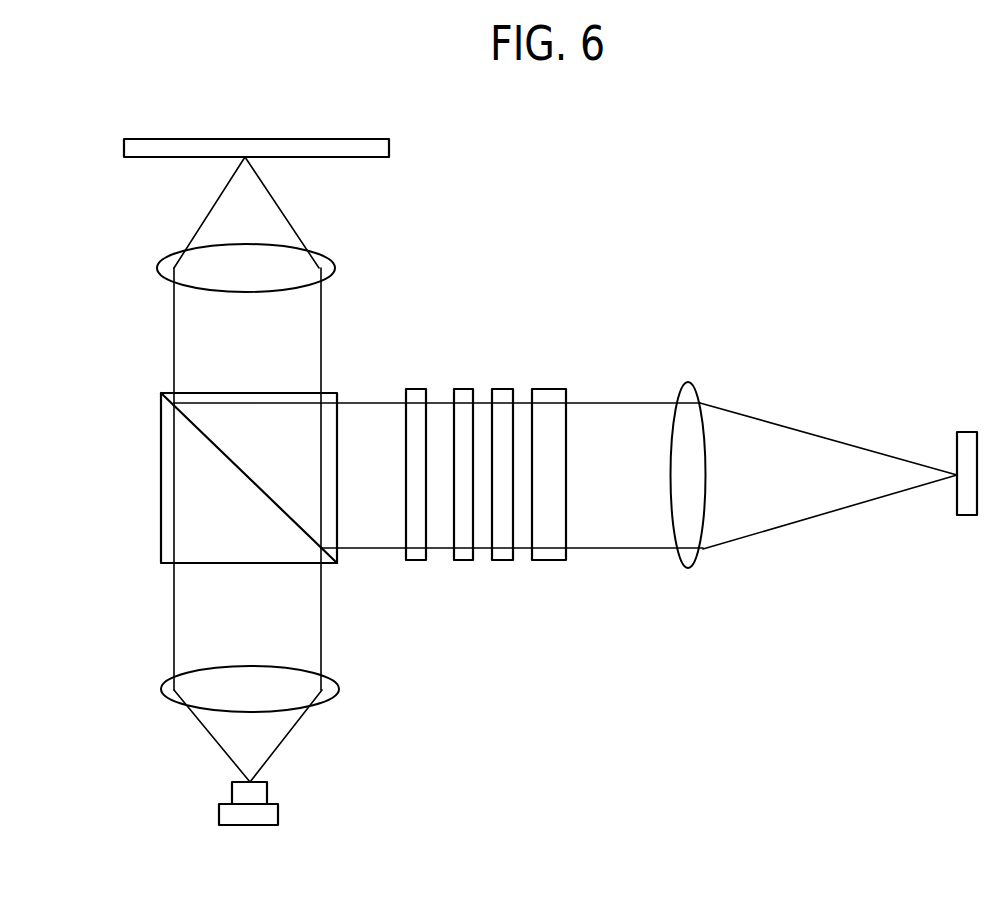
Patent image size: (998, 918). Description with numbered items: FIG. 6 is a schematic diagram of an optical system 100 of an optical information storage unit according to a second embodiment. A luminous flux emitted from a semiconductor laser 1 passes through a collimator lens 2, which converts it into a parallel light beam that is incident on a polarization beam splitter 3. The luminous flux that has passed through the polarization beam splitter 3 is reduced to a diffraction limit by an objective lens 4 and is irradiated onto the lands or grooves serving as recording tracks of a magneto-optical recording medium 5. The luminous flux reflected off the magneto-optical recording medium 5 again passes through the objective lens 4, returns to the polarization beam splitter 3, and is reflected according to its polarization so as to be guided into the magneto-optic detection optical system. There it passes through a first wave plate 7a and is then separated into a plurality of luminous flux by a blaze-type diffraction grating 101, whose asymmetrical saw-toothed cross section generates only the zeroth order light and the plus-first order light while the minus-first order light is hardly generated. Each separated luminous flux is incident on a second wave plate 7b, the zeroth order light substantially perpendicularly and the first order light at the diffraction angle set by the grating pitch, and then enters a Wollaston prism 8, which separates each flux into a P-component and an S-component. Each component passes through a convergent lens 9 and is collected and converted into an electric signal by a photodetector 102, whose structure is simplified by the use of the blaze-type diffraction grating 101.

The optical system 100 is at (80, 107).
The semiconductor laser 1 is at (252, 825).
The collimator lens 2 is at (340, 690).
The polarization beam splitter 3 is at (172, 470).
The objective lens 4 is at (335, 268).
The magneto-optical recording medium 5 is at (389, 148).
The first wave plate 7a is at (417, 540).
The second wave plate 7b is at (505, 389).
The blaze-type diffraction grating 101 is at (466, 545).
The Wollaston prism 8 is at (552, 538).
The convergent lens 9 is at (690, 415).
The photodetector 102 is at (968, 432).